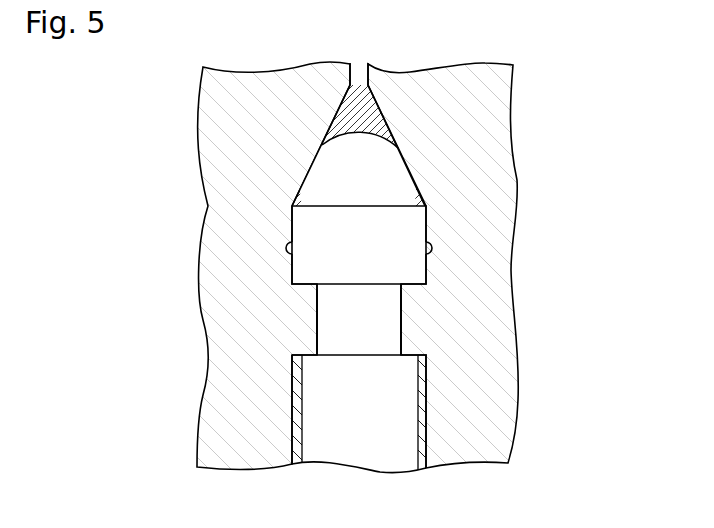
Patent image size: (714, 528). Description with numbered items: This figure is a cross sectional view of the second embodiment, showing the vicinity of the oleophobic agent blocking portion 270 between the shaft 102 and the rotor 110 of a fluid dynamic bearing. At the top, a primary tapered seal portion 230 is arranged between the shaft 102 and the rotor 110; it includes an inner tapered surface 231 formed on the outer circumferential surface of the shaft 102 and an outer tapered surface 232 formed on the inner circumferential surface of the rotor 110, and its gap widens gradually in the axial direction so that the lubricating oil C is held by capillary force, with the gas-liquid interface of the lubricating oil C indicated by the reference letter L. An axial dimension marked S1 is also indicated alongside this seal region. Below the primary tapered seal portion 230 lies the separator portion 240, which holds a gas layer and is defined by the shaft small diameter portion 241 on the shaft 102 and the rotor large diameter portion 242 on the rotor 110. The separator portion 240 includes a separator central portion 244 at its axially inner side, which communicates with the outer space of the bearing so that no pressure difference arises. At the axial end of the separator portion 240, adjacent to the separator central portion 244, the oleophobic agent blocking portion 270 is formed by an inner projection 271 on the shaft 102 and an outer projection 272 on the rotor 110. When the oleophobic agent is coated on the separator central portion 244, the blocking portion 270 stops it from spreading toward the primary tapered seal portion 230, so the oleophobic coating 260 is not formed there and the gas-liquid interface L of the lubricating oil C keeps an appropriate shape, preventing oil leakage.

The shaft 102 is at (257, 428).
The rotor 110 is at (452, 436).
The primary tapered seal portion 230 is at (418, 171).
The inner tapered surface 231 is at (300, 188).
The outer tapered surface 232 is at (397, 163).
The separator portion 240 is at (417, 221).
The shaft small diameter portion 241 is at (287, 252).
The rotor large diameter portion 242 is at (430, 255).
The separator central portion 244 is at (376, 452).
The oleophobic coating 260 is at (290, 386).
The oleophobic agent blocking portion 270 is at (428, 304).
The inner projection 271 is at (317, 323).
The outer projection 272 is at (418, 333).
The lubricating oil C is at (383, 122).
The gas-liquid interface L is at (351, 134).
The dimension S1 is at (292, 206).